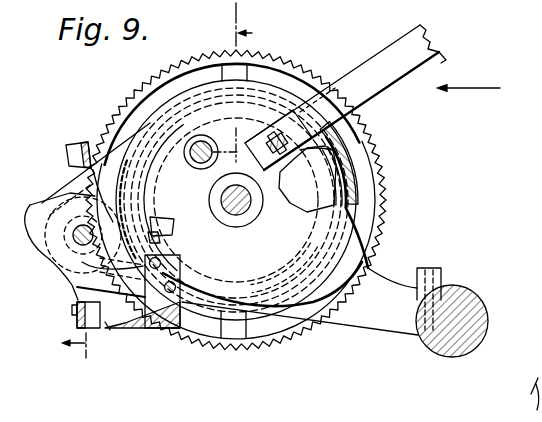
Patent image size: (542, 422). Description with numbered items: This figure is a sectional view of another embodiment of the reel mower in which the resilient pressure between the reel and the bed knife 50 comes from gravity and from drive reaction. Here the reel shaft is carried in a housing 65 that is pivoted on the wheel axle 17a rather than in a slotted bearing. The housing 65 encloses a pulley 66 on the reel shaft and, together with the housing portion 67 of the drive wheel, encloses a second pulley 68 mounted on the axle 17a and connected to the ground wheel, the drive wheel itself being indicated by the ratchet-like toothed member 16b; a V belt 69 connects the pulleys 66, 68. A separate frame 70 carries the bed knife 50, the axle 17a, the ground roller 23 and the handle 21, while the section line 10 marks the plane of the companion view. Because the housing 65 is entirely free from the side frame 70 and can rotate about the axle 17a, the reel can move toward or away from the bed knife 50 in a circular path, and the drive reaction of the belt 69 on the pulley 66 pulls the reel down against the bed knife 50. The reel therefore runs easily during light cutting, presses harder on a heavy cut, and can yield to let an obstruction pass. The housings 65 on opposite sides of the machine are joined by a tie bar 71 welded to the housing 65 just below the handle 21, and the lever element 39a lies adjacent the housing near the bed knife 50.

The section line 10- 10 is at (154, 180).
The ratchet wheel 16b is at (381, 249).
The wheel axle 17a is at (240, 227).
The handle 21 is at (433, 56).
The ground roller 23 is at (445, 352).
The cam lever 39a is at (76, 241).
The bed knife 50 is at (110, 330).
The housing 65 is at (64, 190).
The pulley 66 is at (75, 300).
The housing portion 67 is at (353, 198).
The pulley 68 is at (295, 183).
The V belt 69 is at (338, 168).
The frame 70 is at (238, 308).
The tie bar 71 is at (343, 137).